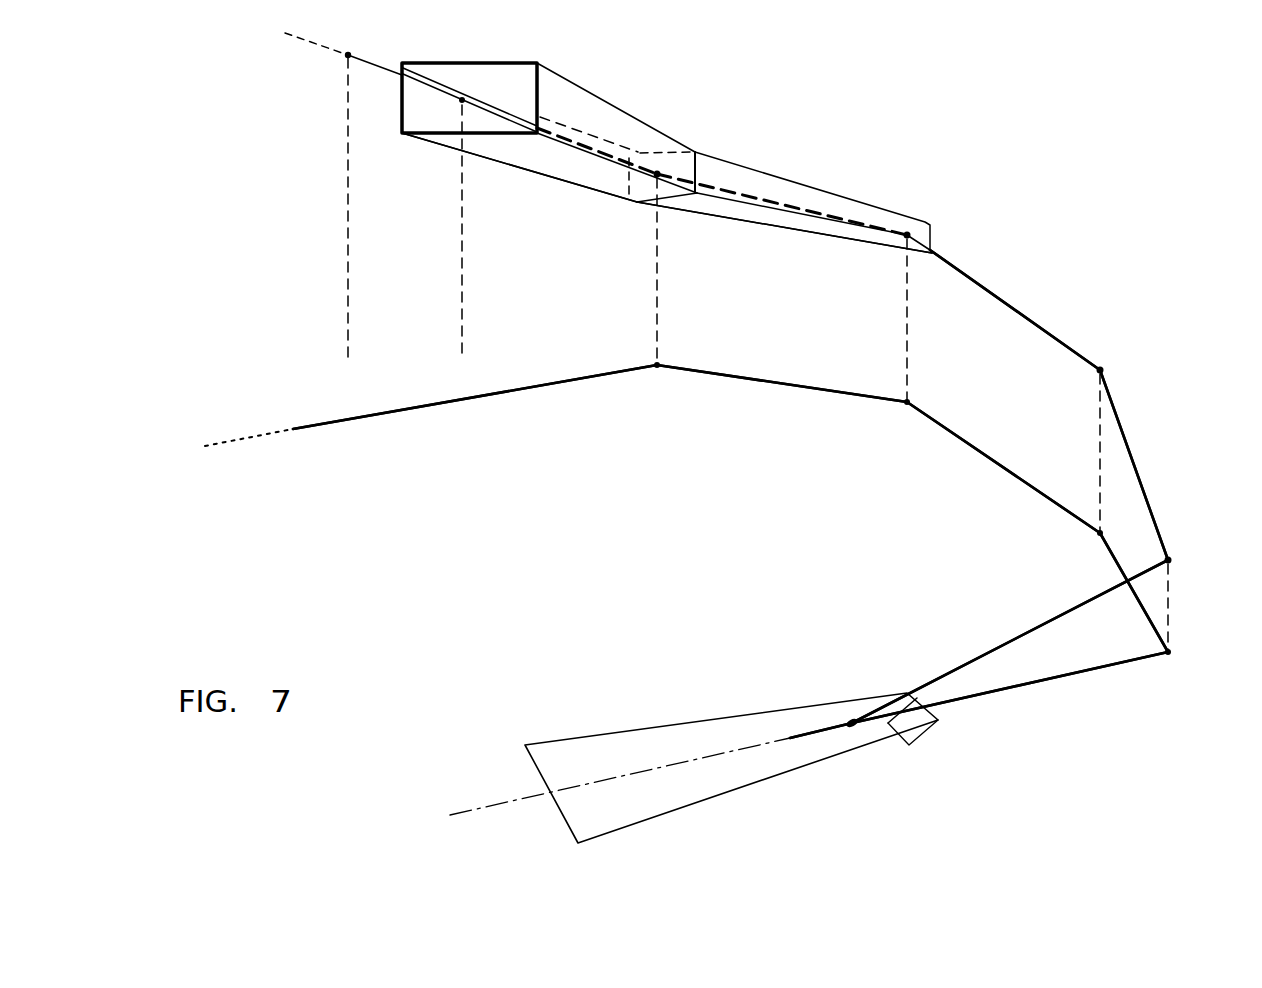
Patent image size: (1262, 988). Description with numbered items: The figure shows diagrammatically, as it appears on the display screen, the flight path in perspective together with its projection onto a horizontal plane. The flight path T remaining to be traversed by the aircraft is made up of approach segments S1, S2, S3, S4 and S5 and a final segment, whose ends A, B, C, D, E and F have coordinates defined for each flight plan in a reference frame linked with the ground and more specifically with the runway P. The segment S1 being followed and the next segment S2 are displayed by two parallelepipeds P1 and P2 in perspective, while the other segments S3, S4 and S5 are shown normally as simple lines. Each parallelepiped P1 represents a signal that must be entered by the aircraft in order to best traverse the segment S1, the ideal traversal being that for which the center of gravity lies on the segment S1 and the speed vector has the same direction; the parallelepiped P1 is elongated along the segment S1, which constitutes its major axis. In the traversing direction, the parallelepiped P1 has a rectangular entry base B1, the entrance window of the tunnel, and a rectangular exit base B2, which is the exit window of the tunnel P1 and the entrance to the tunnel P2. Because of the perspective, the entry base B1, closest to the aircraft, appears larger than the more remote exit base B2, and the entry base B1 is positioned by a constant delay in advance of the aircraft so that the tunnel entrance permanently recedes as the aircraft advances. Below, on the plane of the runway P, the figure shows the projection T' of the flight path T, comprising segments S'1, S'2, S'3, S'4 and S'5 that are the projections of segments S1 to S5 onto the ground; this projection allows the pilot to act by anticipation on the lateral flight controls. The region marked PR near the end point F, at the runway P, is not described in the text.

The end of approach segment A is at (346, 57).
The entry base B1 is at (512, 86).
The approach segment S1 is at (613, 150).
The exit base B2 is at (716, 165).
The next approach segment S2 is at (848, 205).
The end of approach segment C is at (930, 222).
The parallelepiped P1 is at (556, 182).
The end of approach segment B is at (640, 205).
The parallelepiped P2 is at (793, 233).
The approach segment S3 is at (1027, 313).
The flight path T is at (1030, 485).
The end of approach segment D is at (1105, 370).
The approach segment S4 is at (1146, 462).
The end of approach segment E is at (1172, 560).
The approach segment S5 is at (1054, 613).
The end of final segment F is at (900, 703).
The projected segment S'1 is at (431, 405).
The projection of the flight path T' is at (732, 550).
The projected segment S'2 is at (782, 414).
The projected segment S'3 is at (990, 467).
The projected segment S'4 is at (1071, 591).
The projected segment S'5 is at (979, 700).
The runway P is at (615, 730).
The projection region PR is at (888, 723).